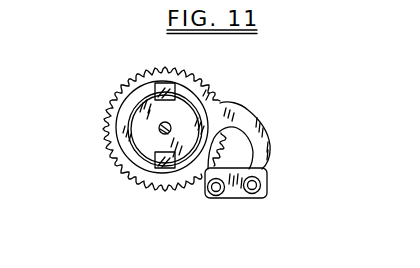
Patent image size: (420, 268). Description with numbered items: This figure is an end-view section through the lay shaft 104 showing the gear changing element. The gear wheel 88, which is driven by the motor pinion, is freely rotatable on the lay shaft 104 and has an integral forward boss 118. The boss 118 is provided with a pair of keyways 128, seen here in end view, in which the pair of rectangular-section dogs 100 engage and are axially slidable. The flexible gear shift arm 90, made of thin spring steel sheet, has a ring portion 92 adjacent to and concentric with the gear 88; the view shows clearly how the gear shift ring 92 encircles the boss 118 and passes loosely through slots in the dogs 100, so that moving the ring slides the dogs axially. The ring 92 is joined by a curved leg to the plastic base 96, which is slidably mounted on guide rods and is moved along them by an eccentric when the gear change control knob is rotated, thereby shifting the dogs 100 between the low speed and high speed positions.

The gear wheel 88 is at (173, 193).
The gear shift arm 90 is at (263, 135).
The ring portion 92 is at (118, 118).
The base 96 is at (240, 188).
The dogs 100 is at (163, 92).
The lay shaft 104 is at (170, 126).
The forward boss 118 is at (143, 133).
The keyways 128 is at (176, 98).